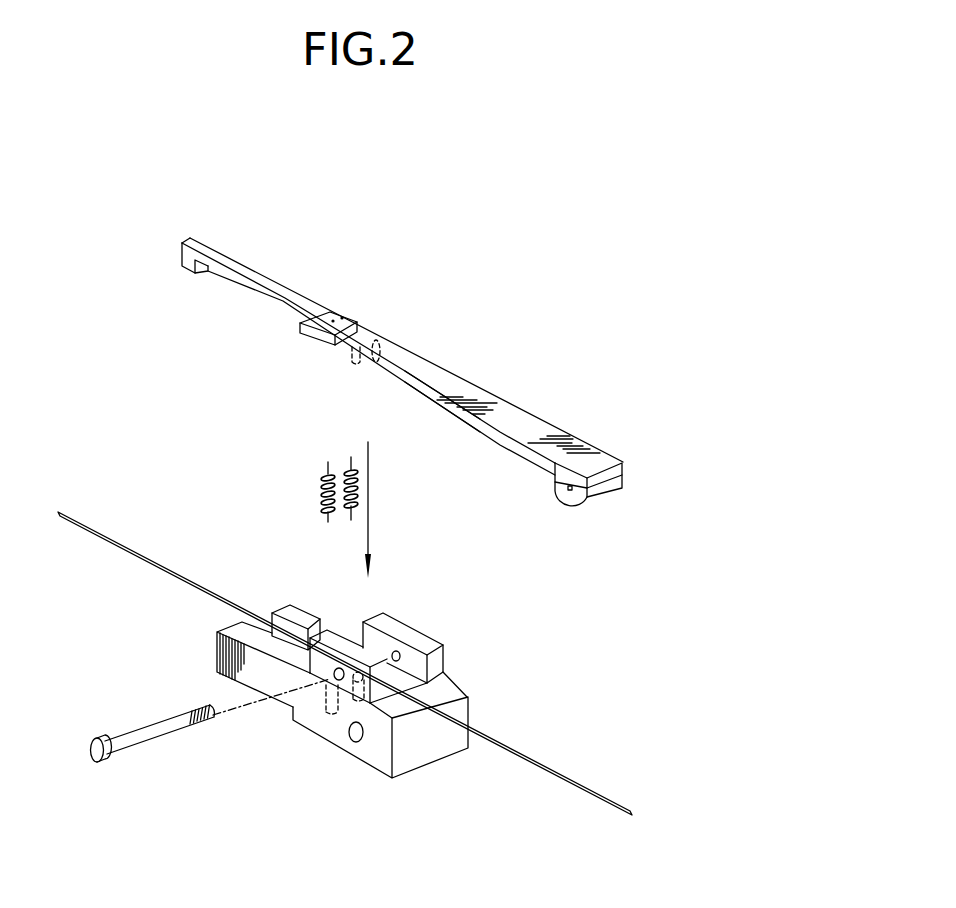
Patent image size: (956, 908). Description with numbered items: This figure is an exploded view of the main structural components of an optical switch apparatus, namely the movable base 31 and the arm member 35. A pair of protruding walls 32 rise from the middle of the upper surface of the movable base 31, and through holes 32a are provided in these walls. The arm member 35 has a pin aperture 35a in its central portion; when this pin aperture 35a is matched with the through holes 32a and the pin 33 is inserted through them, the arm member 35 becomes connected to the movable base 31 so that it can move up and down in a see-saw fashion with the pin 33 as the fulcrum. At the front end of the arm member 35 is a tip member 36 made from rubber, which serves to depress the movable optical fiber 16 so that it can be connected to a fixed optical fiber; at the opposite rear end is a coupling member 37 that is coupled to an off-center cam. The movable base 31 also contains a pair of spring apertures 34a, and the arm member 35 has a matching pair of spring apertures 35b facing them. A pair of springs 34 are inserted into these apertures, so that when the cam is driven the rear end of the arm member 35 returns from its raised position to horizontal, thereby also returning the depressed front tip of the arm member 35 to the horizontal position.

The movable optical fiber 16 is at (588, 803).
The movable base 31 is at (240, 681).
The protruding walls 32 is at (336, 637).
The through holes 32a is at (350, 687).
The pin 33 is at (149, 745).
The springs 34 is at (345, 500).
The spring apertures 34a is at (354, 701).
The arm member 35 is at (597, 455).
The pin aperture 35a is at (399, 385).
The spring apertures 35b is at (374, 364).
The tip member 36 is at (182, 268).
The coupling member 37 is at (567, 498).